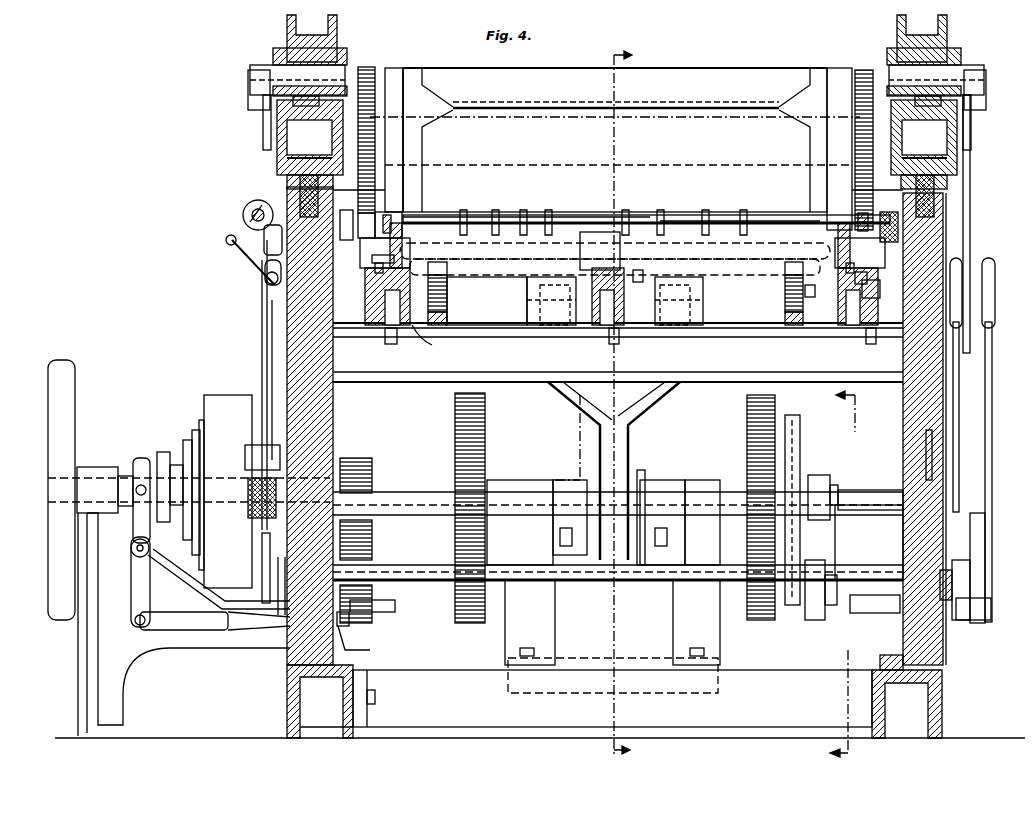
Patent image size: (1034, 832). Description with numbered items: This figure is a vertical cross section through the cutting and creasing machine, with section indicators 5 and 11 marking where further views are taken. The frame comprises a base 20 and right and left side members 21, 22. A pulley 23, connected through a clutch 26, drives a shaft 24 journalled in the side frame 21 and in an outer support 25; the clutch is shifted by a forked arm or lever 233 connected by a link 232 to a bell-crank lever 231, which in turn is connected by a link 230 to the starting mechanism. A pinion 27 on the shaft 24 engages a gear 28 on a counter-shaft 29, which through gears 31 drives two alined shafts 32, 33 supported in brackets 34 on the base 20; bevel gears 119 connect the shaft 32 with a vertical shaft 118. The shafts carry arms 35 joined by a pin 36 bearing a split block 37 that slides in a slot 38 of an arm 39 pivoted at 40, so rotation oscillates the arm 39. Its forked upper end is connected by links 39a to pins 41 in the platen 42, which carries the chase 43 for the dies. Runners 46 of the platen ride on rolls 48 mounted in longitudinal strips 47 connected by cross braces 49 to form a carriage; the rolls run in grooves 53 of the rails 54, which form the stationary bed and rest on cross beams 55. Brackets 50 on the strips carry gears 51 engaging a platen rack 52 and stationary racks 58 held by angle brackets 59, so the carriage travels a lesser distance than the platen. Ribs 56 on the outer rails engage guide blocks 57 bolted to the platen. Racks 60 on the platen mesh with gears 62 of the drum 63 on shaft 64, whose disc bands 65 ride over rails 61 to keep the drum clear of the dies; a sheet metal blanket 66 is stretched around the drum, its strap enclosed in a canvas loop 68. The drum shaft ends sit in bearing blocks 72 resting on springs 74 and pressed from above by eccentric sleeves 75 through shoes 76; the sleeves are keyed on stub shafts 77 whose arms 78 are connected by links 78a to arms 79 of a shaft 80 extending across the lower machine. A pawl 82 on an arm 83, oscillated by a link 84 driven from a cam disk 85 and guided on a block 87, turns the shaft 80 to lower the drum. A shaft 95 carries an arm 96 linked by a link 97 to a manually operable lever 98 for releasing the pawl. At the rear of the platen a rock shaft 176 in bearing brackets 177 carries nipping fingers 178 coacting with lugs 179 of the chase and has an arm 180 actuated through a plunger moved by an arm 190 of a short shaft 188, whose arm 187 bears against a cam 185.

The section line 5- 5 is at (627, 409).
The section line 11- 11 is at (831, 574).
The base 20 is at (586, 698).
The right hand side member 21 is at (290, 655).
The left hand side member 22 is at (945, 650).
The pulley 23 is at (222, 395).
The shaft 24 is at (124, 467).
The outer support 25 is at (169, 548).
The clutch 26 is at (190, 450).
The pinion 27 is at (362, 460).
The gear 28 is at (372, 540).
The counter-shaft 29 is at (618, 554).
The gears 31 is at (486, 412).
The shaft 32 is at (412, 492).
The shaft 33 is at (872, 500).
The brackets 34 is at (505, 640).
The arms 35 is at (574, 495).
The pin or bolt 36 is at (668, 538).
The split block 37 is at (638, 480).
The slot 38 is at (655, 410).
The arm 39 is at (630, 442).
The links 39a is at (610, 305).
The pivot 40 is at (640, 692).
The pins 41 is at (530, 282).
The bed or platen 42 is at (487, 297).
The chase 43 is at (495, 215).
The runners 46 is at (365, 262).
The longitudinal strips 47 is at (724, 280).
The rolls 48 is at (372, 298).
The cross braces 49 is at (528, 240).
The brackets 50 is at (872, 302).
The gear 51 is at (448, 296).
The rack 52 is at (615, 267).
The grooves 53 is at (929, 455).
The rails 54 is at (412, 340).
The cross beams 55 is at (618, 344).
The ribs 56 is at (375, 270).
The guide blocks 57 is at (372, 258).
The racks 58 is at (448, 318).
The angle brackets 59 is at (805, 344).
The racks 60 is at (387, 215).
The rails 61 is at (400, 225).
The gears 62 is at (370, 70).
The drum 63 is at (410, 70).
The shaft 64 is at (283, 138).
The disc bands 65 is at (828, 63).
The sheet metal blanket 66 is at (475, 75).
The canvas loop 68 is at (615, 140).
The bearing blocks 72 is at (280, 110).
The springs 74 is at (300, 180).
The eccentric sleeves 75 is at (300, 58).
The shoes 76 is at (358, 100).
The stub shafts 77 is at (255, 78).
The arm 78 is at (250, 95).
The link 78a is at (262, 130).
The arm 79 is at (255, 612).
The shaft 80 is at (618, 591).
The pawl 82 is at (815, 620).
The arm 83 is at (842, 540).
The link 84 is at (825, 485).
The disk 85 is at (800, 426).
The block 87 is at (838, 490).
The shaft 95 is at (880, 612).
The arm 96 is at (965, 560).
The link 97 is at (983, 524).
The manually-operable lever 98 is at (972, 390).
The vertical shaft 118 is at (260, 330).
The bevel gears 119 is at (262, 500).
The rock shaft 176 is at (680, 220).
The bearing brackets 177 is at (597, 232).
The nipping fingers 178 is at (603, 207).
The lugs 179 is at (655, 215).
The arm 180 is at (348, 215).
The cam 185 is at (248, 208).
The arm 187 is at (232, 244).
The short shaft 188 is at (266, 280).
The arm 190 is at (264, 262).
The link 230 is at (377, 603).
The bell-crank lever 231 is at (377, 634).
The link 232 is at (190, 630).
The arm or lever 233 is at (132, 590).